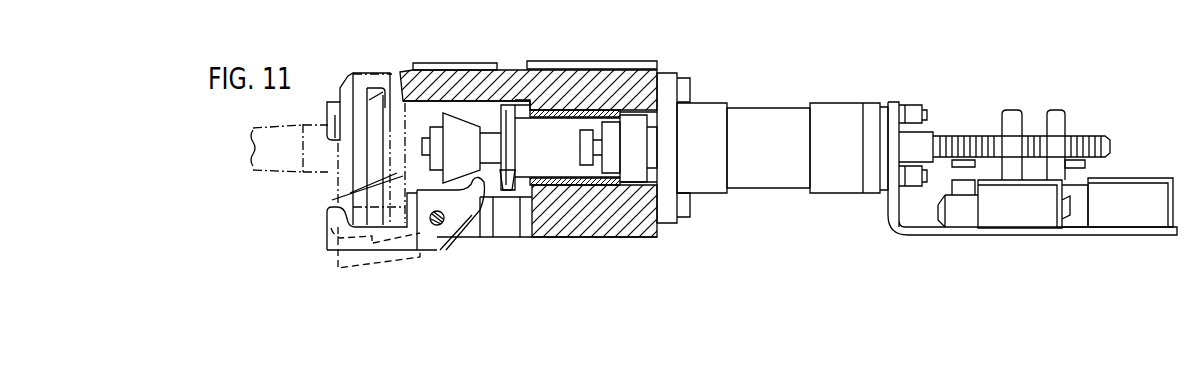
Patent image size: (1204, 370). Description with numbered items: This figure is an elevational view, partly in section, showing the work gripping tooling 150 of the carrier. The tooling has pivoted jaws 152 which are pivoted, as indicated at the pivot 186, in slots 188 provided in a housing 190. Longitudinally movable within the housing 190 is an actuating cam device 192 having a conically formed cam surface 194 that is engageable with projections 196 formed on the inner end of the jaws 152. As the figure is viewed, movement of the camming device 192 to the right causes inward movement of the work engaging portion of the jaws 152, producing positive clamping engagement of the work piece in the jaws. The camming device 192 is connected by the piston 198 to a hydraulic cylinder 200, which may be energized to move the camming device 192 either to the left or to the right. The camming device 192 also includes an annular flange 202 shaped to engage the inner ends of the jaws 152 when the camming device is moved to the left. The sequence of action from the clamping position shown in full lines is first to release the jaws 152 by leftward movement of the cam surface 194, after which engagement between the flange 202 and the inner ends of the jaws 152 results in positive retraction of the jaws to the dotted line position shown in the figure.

The work gripping tooling 150 is at (665, 68).
The pivoted jaws 152 is at (328, 225).
The pivot 186 is at (436, 225).
The slots 188 is at (508, 230).
The housing 190 is at (637, 230).
The actuating cam device 192 is at (445, 104).
The conically formed cam surface 194 is at (488, 108).
The projections 196 is at (467, 231).
The piston 198 is at (637, 145).
The hydraulic cylinder 200 is at (767, 116).
The annular flange 202 is at (518, 100).